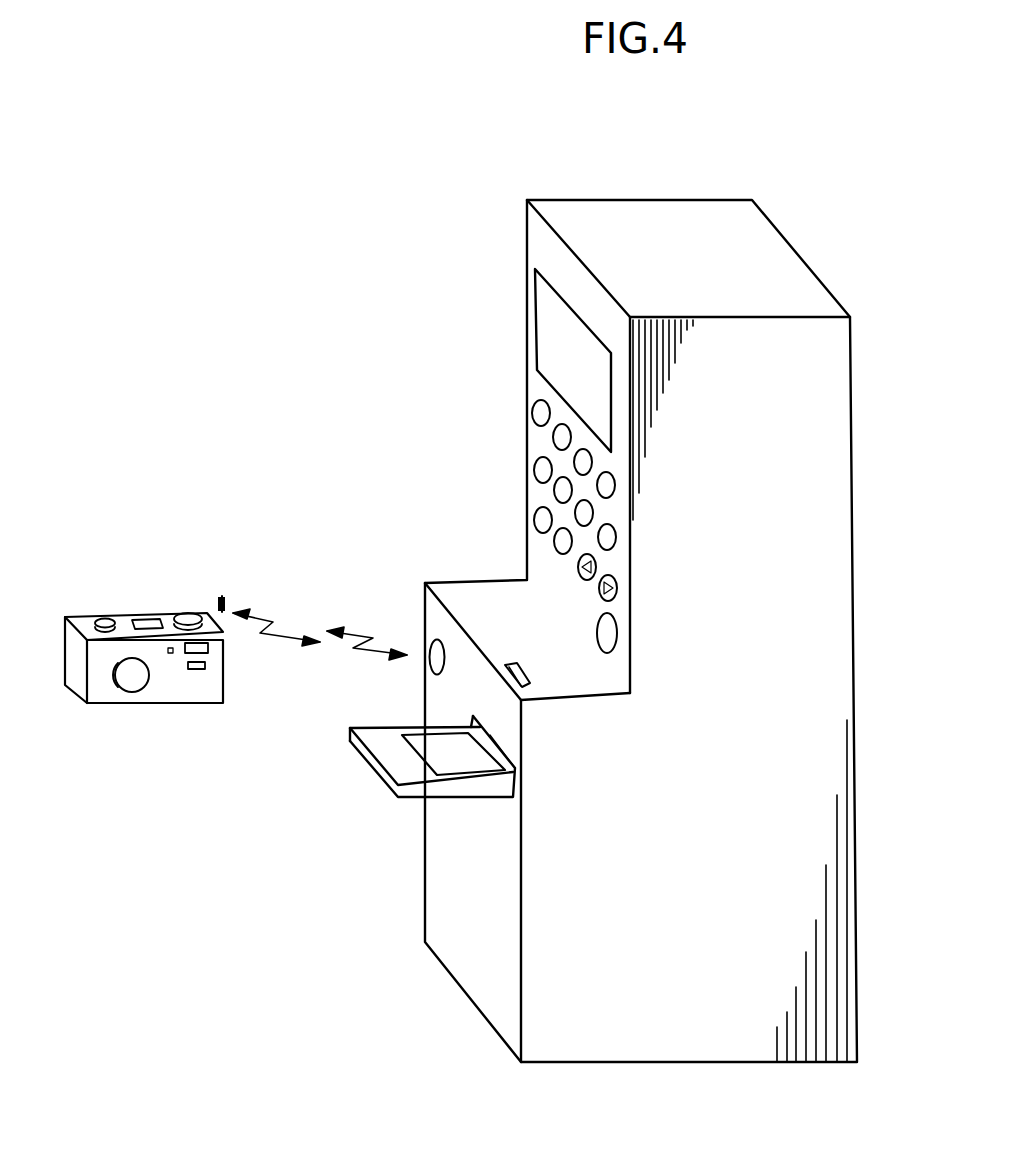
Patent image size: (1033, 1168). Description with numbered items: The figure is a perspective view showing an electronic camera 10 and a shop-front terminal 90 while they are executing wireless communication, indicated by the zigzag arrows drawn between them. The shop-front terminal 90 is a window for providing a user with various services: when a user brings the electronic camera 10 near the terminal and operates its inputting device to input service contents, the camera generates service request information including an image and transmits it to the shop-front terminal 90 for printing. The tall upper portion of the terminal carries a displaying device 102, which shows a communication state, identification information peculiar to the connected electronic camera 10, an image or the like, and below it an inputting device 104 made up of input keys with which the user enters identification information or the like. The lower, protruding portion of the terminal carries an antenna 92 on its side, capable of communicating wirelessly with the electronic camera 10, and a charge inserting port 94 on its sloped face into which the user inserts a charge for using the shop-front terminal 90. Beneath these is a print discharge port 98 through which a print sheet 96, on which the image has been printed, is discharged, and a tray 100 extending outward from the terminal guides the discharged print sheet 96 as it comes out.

The shop-front terminal 90 is at (845, 283).
The displaying device 102 is at (553, 330).
The inputting device 104 is at (532, 418).
The antenna 92 is at (430, 655).
The charge inserting port 94 is at (533, 677).
The tray 100 is at (385, 743).
The print sheet 96 is at (465, 752).
The print discharge port 98 is at (498, 757).
The electronic camera 10 is at (185, 680).